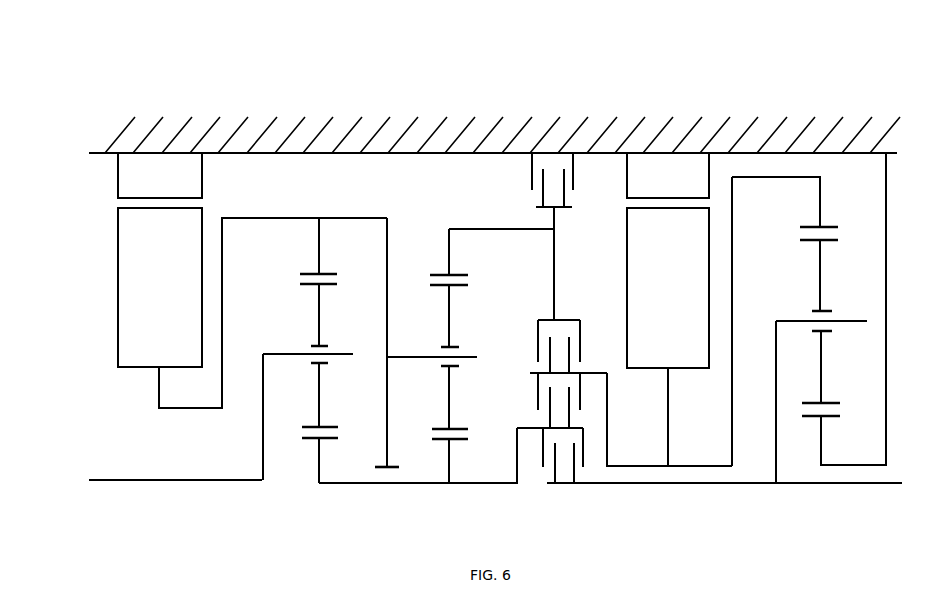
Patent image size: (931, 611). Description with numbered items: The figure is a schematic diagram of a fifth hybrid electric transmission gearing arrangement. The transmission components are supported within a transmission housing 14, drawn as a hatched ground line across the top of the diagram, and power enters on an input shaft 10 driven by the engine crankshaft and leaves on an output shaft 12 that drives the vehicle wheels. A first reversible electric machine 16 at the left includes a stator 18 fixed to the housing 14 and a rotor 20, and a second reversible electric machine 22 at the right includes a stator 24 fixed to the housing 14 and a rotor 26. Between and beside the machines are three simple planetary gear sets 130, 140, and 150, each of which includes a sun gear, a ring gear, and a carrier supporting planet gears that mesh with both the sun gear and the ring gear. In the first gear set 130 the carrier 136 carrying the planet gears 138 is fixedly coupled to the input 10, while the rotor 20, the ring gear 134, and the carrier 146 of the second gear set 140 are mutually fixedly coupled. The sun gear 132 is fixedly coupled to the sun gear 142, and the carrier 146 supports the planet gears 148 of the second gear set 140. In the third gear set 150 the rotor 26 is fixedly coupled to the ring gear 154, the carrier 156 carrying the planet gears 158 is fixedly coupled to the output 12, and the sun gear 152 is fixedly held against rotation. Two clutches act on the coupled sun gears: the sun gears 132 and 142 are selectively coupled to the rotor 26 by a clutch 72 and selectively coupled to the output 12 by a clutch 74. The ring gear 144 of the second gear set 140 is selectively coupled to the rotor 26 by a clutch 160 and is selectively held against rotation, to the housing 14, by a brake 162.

The input shaft 10 is at (130, 480).
The output shaft 12 is at (708, 483).
The transmission housing 14 is at (373, 127).
The first reversible electric machine 16 is at (143, 238).
The stator 18 is at (118, 168).
The rotor 20 is at (118, 295).
The second reversible electric machine 22 is at (648, 227).
The stator 24 is at (627, 177).
The rotor 26 is at (626, 328).
The clutch 72 is at (537, 403).
The clutch 74 is at (557, 483).
The first simple planetary gear set 130 is at (368, 370).
The sun gear 132 is at (319, 470).
The ring gear 134 is at (317, 233).
The carrier 136 is at (263, 398).
The planet gears 138 is at (320, 318).
The second simple planetary gear set 140 is at (464, 357).
The sun gear 142 is at (452, 470).
The ring gear 144 is at (448, 245).
The carrier 146 is at (387, 250).
The planet gears 148 is at (452, 330).
The third simple planetary gear set 150 is at (809, 333).
The sun gear 152 is at (822, 447).
The ring gear 154 is at (820, 195).
The carrier 156 is at (775, 365).
The planet gears 158 is at (822, 272).
The clutch 160 is at (535, 348).
The brake 162 is at (530, 175).